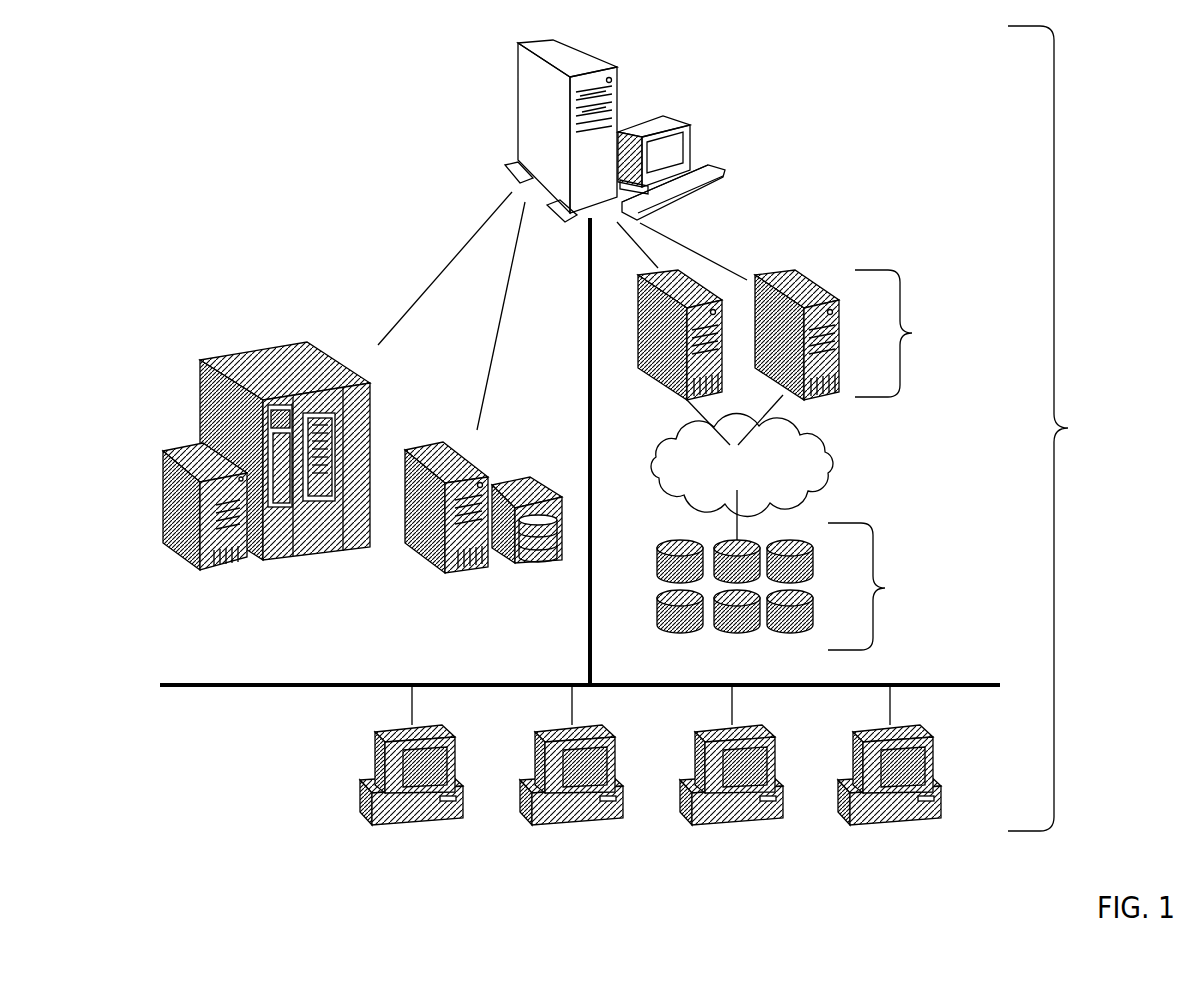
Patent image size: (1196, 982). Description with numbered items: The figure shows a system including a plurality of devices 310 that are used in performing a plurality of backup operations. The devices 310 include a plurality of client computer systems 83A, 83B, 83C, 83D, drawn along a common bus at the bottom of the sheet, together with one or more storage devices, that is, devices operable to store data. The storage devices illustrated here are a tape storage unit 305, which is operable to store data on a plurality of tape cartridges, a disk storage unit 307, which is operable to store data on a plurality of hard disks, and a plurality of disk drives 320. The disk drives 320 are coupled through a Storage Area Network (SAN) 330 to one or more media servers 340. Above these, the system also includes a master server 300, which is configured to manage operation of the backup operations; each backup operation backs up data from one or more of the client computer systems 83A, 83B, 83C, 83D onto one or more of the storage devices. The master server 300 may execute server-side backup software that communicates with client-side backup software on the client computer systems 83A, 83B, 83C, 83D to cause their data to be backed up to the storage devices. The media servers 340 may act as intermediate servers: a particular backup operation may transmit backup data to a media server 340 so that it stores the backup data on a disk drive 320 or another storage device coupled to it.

The master server 300 is at (639, 131).
The tape storage unit 305 is at (266, 489).
The disk storage unit 307 is at (483, 539).
The devices 310 is at (1089, 428).
The disk drives 320 is at (828, 586).
The Storage Area Network (SAN) 330 is at (742, 465).
The media servers 340 is at (824, 335).
The client computer system 83A is at (412, 805).
The client computer system 83B is at (572, 805).
The client computer system 83C is at (737, 805).
The client computer system 83D is at (900, 804).